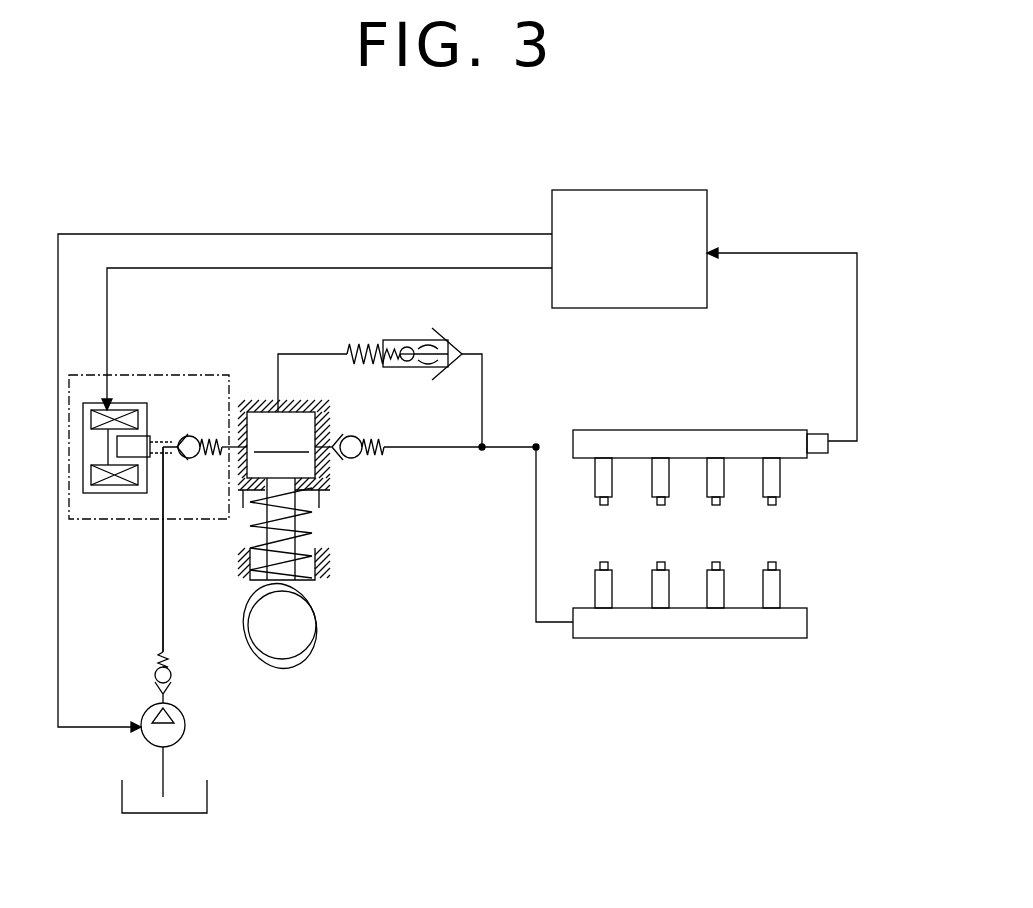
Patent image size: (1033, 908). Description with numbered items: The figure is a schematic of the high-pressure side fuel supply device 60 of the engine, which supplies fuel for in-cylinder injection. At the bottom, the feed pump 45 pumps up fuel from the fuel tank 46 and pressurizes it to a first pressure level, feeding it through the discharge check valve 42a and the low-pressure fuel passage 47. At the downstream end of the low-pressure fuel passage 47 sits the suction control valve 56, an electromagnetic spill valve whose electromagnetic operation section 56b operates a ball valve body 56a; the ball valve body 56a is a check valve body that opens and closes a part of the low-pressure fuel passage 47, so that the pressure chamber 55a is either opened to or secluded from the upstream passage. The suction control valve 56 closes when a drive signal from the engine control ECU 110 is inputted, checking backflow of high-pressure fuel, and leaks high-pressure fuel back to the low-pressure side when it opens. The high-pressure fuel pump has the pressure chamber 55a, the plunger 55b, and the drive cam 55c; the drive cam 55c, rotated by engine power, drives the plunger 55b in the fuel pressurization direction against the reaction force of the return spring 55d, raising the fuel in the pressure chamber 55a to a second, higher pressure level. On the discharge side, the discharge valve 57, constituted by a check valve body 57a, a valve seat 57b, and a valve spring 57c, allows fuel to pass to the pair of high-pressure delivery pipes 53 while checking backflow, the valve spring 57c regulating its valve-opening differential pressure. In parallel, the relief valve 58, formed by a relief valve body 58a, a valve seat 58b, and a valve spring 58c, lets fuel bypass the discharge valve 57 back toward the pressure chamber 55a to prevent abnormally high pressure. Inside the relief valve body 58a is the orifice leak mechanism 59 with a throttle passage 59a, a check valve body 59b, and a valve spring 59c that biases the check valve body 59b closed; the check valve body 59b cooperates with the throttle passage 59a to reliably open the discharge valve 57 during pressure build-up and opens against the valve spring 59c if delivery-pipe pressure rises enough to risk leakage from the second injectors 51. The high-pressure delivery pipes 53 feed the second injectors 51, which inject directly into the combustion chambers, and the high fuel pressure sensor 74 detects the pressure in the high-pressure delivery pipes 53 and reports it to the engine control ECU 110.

The high-pressure side fuel supply device 60 is at (227, 198).
The engine control ECU 110 is at (620, 190).
The suction control valve 56 is at (158, 473).
The ball valve body 56a is at (186, 434).
The electromagnetic operation section 56b is at (126, 402).
The pressure chamber 55a is at (284, 490).
The plunger 55b is at (312, 520).
The drive cam 55c is at (318, 640).
The return spring 55d is at (302, 547).
The discharge valve 57 is at (427, 448).
The check valve body 57a is at (360, 460).
The valve seat 57b is at (347, 434).
The valve spring 57c is at (380, 453).
The relief valve 58 is at (409, 356).
The relief valve body 58a is at (432, 338).
The valve seat 58b is at (463, 353).
The valve spring 58c is at (350, 343).
The orifice leak mechanism 59 is at (419, 346).
The throttle passage 59a is at (425, 367).
The check valve body 59b is at (406, 362).
The valve spring 59c is at (405, 346).
The high-pressure delivery pipes 53 is at (608, 430).
The second injectors 51 is at (612, 495).
The high fuel pressure sensor 74 is at (822, 456).
The low-pressure fuel passage 47 is at (163, 600).
The discharge check valve 42a is at (155, 683).
The feed pump 45 is at (148, 744).
The fuel tank 46 is at (122, 797).